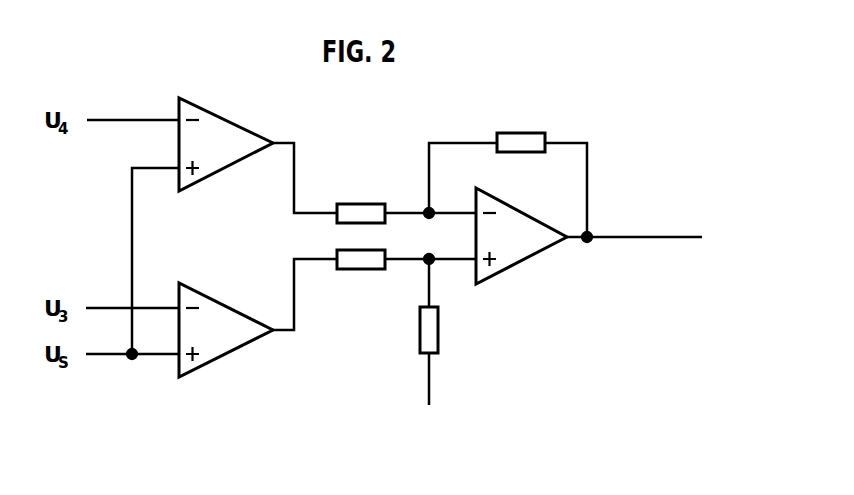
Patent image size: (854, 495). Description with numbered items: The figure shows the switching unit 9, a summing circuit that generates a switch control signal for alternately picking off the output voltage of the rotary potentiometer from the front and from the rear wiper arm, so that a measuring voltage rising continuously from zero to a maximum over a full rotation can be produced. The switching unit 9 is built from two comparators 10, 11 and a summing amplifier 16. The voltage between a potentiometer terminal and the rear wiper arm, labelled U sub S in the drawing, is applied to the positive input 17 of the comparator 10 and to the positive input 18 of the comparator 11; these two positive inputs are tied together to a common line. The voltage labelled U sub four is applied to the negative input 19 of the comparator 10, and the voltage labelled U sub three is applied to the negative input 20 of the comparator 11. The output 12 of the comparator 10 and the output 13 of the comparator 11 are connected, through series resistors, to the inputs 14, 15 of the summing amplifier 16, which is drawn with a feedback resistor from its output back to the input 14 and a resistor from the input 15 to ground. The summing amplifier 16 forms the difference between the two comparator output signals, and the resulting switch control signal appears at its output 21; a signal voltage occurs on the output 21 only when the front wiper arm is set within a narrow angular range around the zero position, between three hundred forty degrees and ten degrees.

The switching unit 9 is at (585, 288).
The comparator 10 is at (227, 130).
The comparator 11 is at (229, 340).
The output 12 is at (275, 141).
The output 13 is at (272, 334).
The input 14 is at (450, 208).
The input 15 is at (453, 264).
The summing amplifier 16 is at (524, 250).
The positive input 17 is at (153, 166).
The positive input 18 is at (157, 357).
The negative input 19 is at (140, 118).
The negative input 20 is at (156, 305).
The output 21 is at (639, 233).